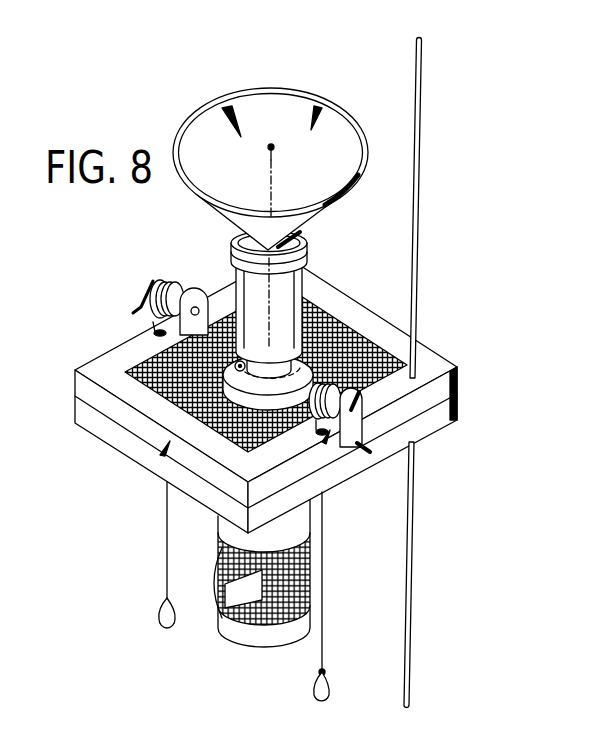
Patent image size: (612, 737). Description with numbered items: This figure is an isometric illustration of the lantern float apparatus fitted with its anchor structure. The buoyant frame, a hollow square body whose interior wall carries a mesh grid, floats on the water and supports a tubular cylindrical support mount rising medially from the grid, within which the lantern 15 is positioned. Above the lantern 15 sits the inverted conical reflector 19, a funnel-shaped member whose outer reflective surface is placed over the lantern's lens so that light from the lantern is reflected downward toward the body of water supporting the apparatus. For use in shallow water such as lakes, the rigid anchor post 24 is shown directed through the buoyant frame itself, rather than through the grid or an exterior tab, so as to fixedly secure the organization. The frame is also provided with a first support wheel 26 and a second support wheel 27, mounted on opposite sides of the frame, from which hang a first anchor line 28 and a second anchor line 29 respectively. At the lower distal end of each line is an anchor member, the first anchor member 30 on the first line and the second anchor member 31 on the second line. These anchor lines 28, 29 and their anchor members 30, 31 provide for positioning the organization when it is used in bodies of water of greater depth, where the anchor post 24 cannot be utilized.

The lantern 15 is at (312, 262).
The inverted conical reflector 19 is at (296, 104).
The rigid anchor post 24 is at (417, 274).
The first support wheel 26 is at (180, 279).
The second support wheel 27 is at (366, 397).
The first anchor line 28 is at (163, 514).
The second anchor line 29 is at (322, 552).
The first anchor member 30 is at (163, 603).
The second anchor member 31 is at (327, 684).